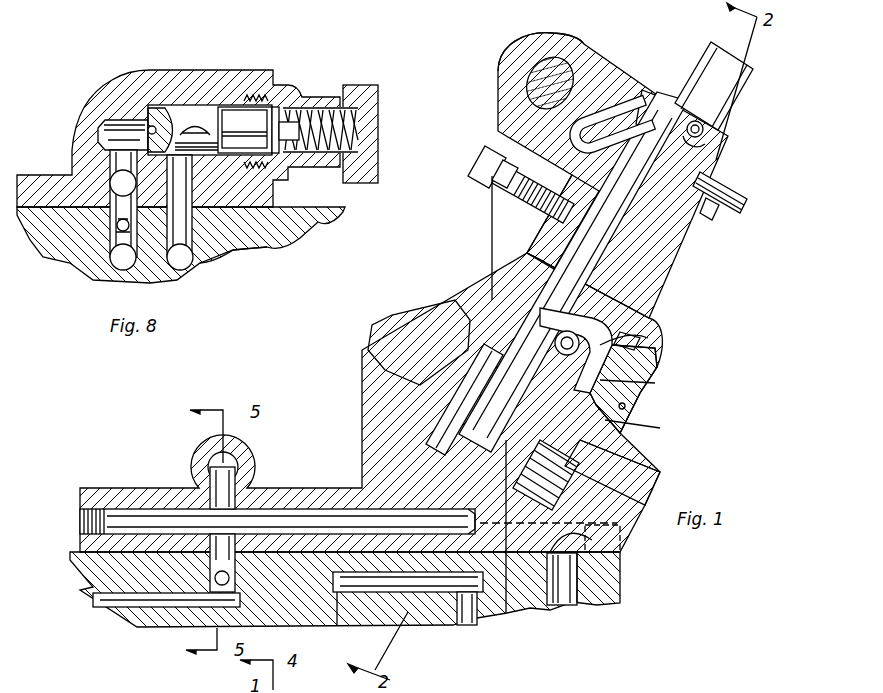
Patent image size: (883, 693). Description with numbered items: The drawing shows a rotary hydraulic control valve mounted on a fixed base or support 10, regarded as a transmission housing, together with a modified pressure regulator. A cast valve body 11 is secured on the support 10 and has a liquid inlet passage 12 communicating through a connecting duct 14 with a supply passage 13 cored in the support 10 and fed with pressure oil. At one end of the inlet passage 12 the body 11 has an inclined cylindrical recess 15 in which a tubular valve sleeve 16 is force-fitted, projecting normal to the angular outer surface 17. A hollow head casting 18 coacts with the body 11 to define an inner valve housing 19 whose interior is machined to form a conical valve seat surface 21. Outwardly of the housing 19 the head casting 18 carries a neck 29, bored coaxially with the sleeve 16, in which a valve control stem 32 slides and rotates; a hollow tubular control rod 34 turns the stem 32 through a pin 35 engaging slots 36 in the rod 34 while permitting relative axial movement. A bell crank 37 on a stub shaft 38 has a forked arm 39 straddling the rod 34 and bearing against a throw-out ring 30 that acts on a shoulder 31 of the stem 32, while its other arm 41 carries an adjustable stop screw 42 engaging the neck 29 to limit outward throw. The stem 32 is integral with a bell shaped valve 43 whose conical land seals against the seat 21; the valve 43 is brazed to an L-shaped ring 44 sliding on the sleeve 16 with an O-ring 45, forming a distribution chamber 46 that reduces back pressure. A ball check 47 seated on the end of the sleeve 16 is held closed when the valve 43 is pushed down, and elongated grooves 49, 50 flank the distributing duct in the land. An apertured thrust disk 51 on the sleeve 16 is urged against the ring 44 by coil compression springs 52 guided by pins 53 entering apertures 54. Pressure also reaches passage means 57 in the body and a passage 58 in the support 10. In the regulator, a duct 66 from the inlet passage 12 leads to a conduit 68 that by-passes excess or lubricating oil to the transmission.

In FIG. 8, the fixed base or support 10 is at (318, 222).
In FIG. 1, the fixed base or support 10 is at (88, 580).
In FIG. 8, the valve base or body 11 is at (236, 100).
In FIG. 1, the valve base or body 11 is at (395, 395).
In FIG. 8, the liquid inlet passage 12 is at (205, 115).
In FIG. 1, the liquid inlet passage 12 is at (305, 508).
In FIG. 8, the supply duct or passage 13 is at (258, 243).
In FIG. 1, the supply duct or passage 13 is at (170, 607).
In FIG. 8, the connecting duct 14 is at (160, 108).
In FIG. 1, the connecting duct 14 is at (236, 576).
In FIG. 8, the cylindrical recess 15 is at (127, 120).
In FIG. 1, the cylindrical recess 15 is at (507, 612).
In FIG. 8, the tubular valve insert or sleeve 16 is at (318, 108).
In FIG. 1, the tubular valve insert or sleeve 16 is at (593, 432).
In FIG. 1, the angular outer surface 17 is at (620, 455).
In FIG. 1, the head casting or valve block 18 is at (660, 384).
In FIG. 1, the inner valve housing 19 is at (645, 397).
In FIG. 1, the conical valve seat surface 21 is at (645, 352).
In FIG. 1, the neck 29 is at (672, 280).
In FIG. 1, the thrust or throw-out ring 30 is at (717, 182).
In FIG. 1, the shoulder 31 is at (711, 208).
In FIG. 1, the valve control stem 32 is at (615, 178).
In FIG. 1, the hollow tubular control rod 34 is at (742, 92).
In FIG. 1, the pin 35 is at (704, 131).
In FIG. 1, the slots 36 is at (706, 148).
In FIG. 1, the bell crank 37 is at (580, 48).
In FIG. 1, the stub shaft 38 is at (520, 77).
In FIG. 1, the forked arm 39 is at (641, 90).
In FIG. 8, the bell crank arm 41 is at (253, 98).
In FIG. 1, the bell crank arm 41 is at (527, 147).
In FIG. 1, the adjustable stop screw 42 is at (523, 207).
In FIG. 1, the bell shaped valve 43 is at (551, 253).
In FIG. 1, the ring of L-shaped section 44 is at (450, 322).
In FIG. 1, the O-ring 45 is at (662, 428).
In FIG. 1, the distribution chamber 46 is at (628, 407).
In FIG. 1, the ball check 47 is at (530, 313).
In FIG. 1, the elongated groove 49 is at (530, 260).
In FIG. 1, the elongated groove 50 is at (650, 336).
In FIG. 1, the apertured thrust disk 51 is at (648, 450).
In FIG. 1, the coil compression springs 52 is at (580, 604).
In FIG. 1, the pins 53 is at (450, 410).
In FIG. 1, the apertures 54 is at (555, 338).
In FIG. 1, the passage means 57 is at (627, 538).
In FIG. 1, the passage 58 is at (560, 606).
In FIG. 1, the liquid duct 66 is at (240, 446).
In FIG. 8, the conduit 68 is at (192, 256).
In FIG. 1, the conduit 68 is at (337, 575).